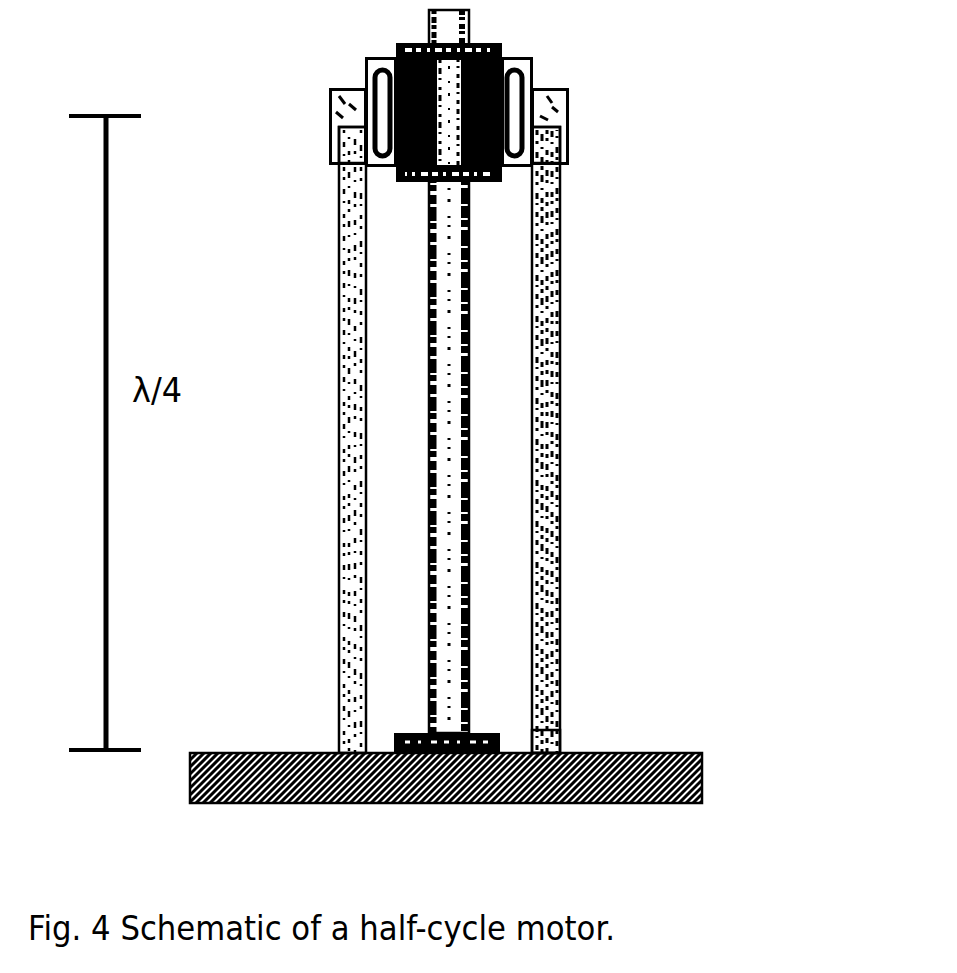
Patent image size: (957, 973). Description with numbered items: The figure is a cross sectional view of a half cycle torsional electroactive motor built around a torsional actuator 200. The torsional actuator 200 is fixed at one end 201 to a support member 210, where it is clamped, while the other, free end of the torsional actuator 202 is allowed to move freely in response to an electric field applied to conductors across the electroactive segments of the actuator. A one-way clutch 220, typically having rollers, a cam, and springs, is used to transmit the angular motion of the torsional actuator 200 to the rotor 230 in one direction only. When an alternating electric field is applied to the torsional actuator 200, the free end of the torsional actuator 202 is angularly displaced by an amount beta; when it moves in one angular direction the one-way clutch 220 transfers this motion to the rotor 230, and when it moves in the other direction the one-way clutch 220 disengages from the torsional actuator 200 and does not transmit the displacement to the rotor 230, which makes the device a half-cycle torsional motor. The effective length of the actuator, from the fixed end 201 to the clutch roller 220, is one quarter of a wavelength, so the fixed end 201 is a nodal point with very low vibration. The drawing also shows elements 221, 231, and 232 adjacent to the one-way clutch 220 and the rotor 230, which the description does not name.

The torsional actuator 200 is at (560, 357).
The fixed end of the torsional actuator 201 is at (547, 737).
The free end of the torsional actuator 202 is at (553, 165).
The support member 210 is at (623, 757).
The one-way clutch 220 is at (532, 71).
The piezoelectric elements 221 is at (531, 115).
The rotor 230 is at (447, 468).
The mounting blocks 231 is at (540, 133).
The bottom bearing 232 is at (477, 733).